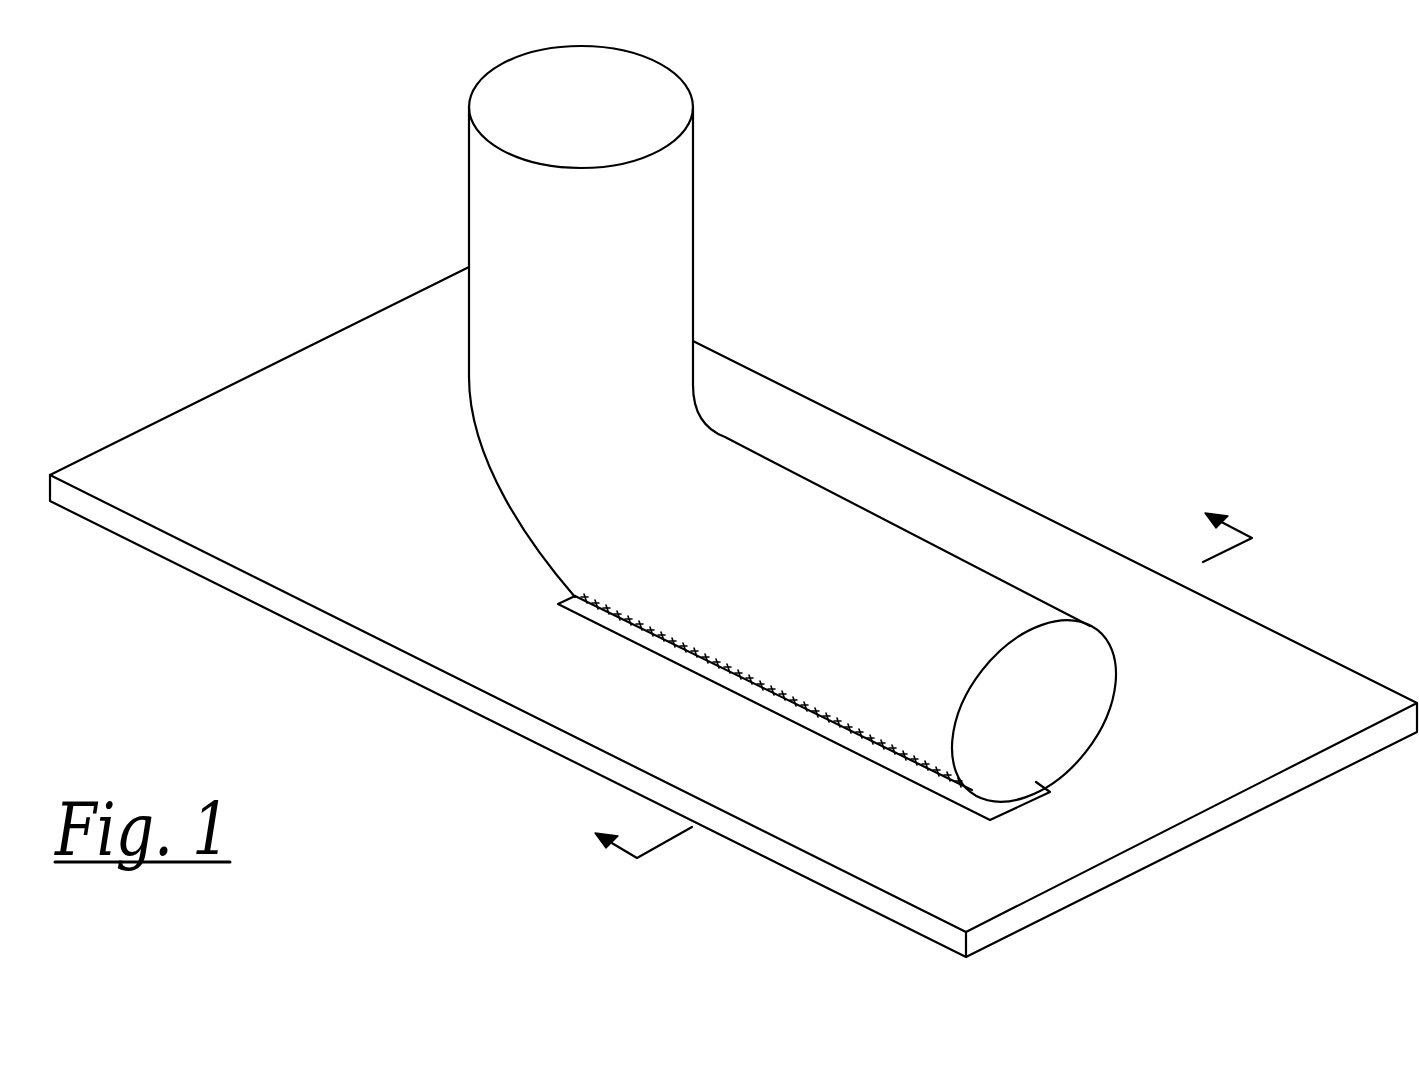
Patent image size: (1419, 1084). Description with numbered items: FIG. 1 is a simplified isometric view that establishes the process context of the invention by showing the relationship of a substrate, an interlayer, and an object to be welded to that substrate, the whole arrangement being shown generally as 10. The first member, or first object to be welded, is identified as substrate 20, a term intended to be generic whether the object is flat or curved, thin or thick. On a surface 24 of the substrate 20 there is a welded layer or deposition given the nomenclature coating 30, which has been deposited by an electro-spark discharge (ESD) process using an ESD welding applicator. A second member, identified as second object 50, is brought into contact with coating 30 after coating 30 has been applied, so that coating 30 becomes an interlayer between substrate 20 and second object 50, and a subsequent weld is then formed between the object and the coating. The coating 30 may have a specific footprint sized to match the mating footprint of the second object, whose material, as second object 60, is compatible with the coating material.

The pipe and plate assembly 10 is at (905, 292).
The substrate 20 is at (258, 428).
The surface 24 is at (895, 777).
The coating 30 is at (577, 613).
The second object 50 is at (500, 193).
The second object 60 is at (707, 672).